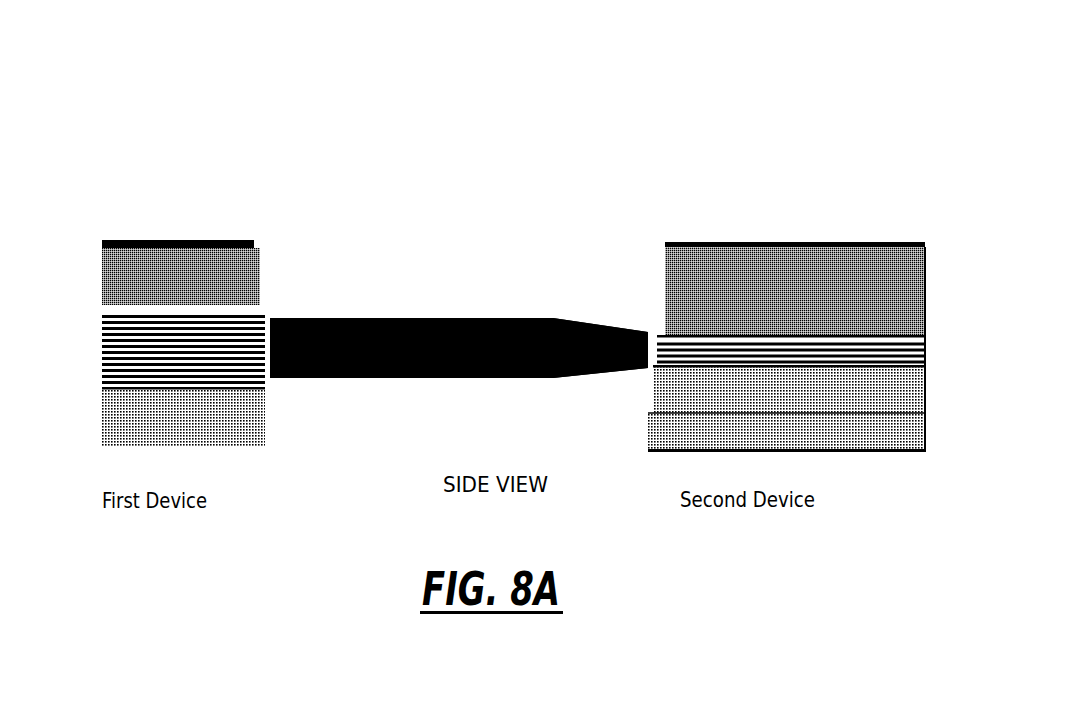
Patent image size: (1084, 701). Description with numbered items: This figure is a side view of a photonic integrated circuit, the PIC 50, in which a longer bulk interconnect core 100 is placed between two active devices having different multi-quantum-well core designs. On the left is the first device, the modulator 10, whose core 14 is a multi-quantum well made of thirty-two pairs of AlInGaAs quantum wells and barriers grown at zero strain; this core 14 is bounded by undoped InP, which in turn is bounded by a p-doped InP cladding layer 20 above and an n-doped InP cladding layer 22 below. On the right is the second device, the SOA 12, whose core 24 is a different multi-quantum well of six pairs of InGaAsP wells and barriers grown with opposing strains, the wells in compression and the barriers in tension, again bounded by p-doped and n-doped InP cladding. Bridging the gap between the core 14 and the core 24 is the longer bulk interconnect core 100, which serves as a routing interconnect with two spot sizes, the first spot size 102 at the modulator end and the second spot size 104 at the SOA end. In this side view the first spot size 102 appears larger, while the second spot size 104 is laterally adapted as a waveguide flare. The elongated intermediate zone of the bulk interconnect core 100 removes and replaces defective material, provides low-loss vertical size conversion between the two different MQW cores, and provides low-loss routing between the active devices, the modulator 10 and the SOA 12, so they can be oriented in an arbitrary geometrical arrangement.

The PIC 50 is at (636, 82).
The modulator 10 is at (160, 198).
The SOA 12 is at (791, 201).
The p-doped InP cladding layer 20 is at (197, 258).
The core 14 is at (102, 348).
The n-doped InP cladding layer 22 is at (102, 418).
The longer bulk interconnect core 100 is at (405, 316).
The first spot size 102 is at (272, 322).
The second spot size 104 is at (644, 330).
The core 24 is at (904, 350).